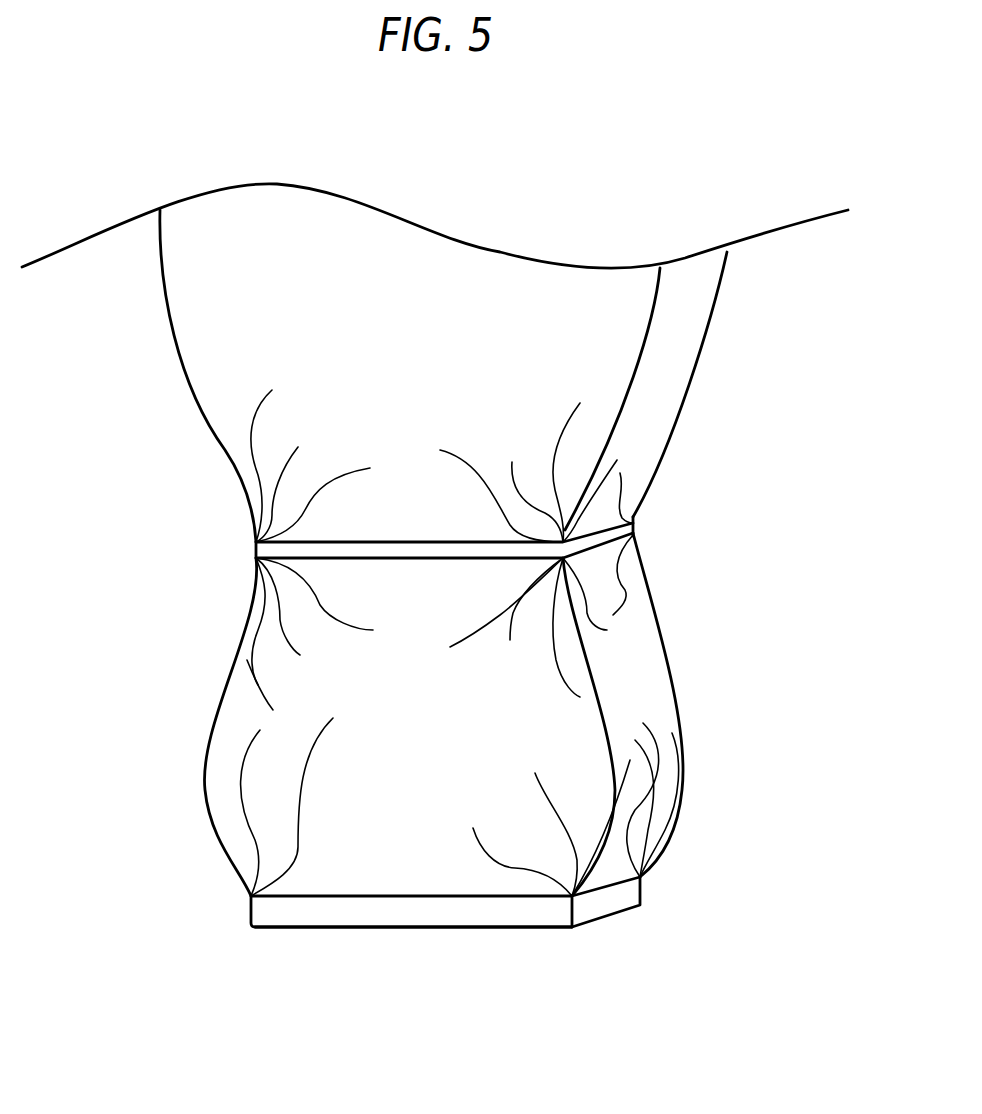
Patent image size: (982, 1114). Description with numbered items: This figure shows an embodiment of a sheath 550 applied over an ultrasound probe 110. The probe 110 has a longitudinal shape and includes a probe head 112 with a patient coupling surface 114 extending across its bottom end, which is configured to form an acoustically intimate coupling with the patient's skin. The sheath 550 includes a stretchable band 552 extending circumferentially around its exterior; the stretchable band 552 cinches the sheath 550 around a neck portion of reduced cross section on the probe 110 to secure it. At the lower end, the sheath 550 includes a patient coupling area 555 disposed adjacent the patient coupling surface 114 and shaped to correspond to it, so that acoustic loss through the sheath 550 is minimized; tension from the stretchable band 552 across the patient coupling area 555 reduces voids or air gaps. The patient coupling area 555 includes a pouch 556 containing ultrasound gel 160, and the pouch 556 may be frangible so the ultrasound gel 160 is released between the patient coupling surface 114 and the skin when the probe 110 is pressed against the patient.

The probe 110 is at (508, 327).
The probe head 112 is at (362, 793).
The patient coupling surface 114 is at (434, 893).
The ultrasound gel 160 is at (498, 910).
The sheath 550 is at (682, 398).
The stretchable band 552 is at (397, 560).
The patient coupling area 555 is at (333, 912).
The pouch 556 is at (482, 927).